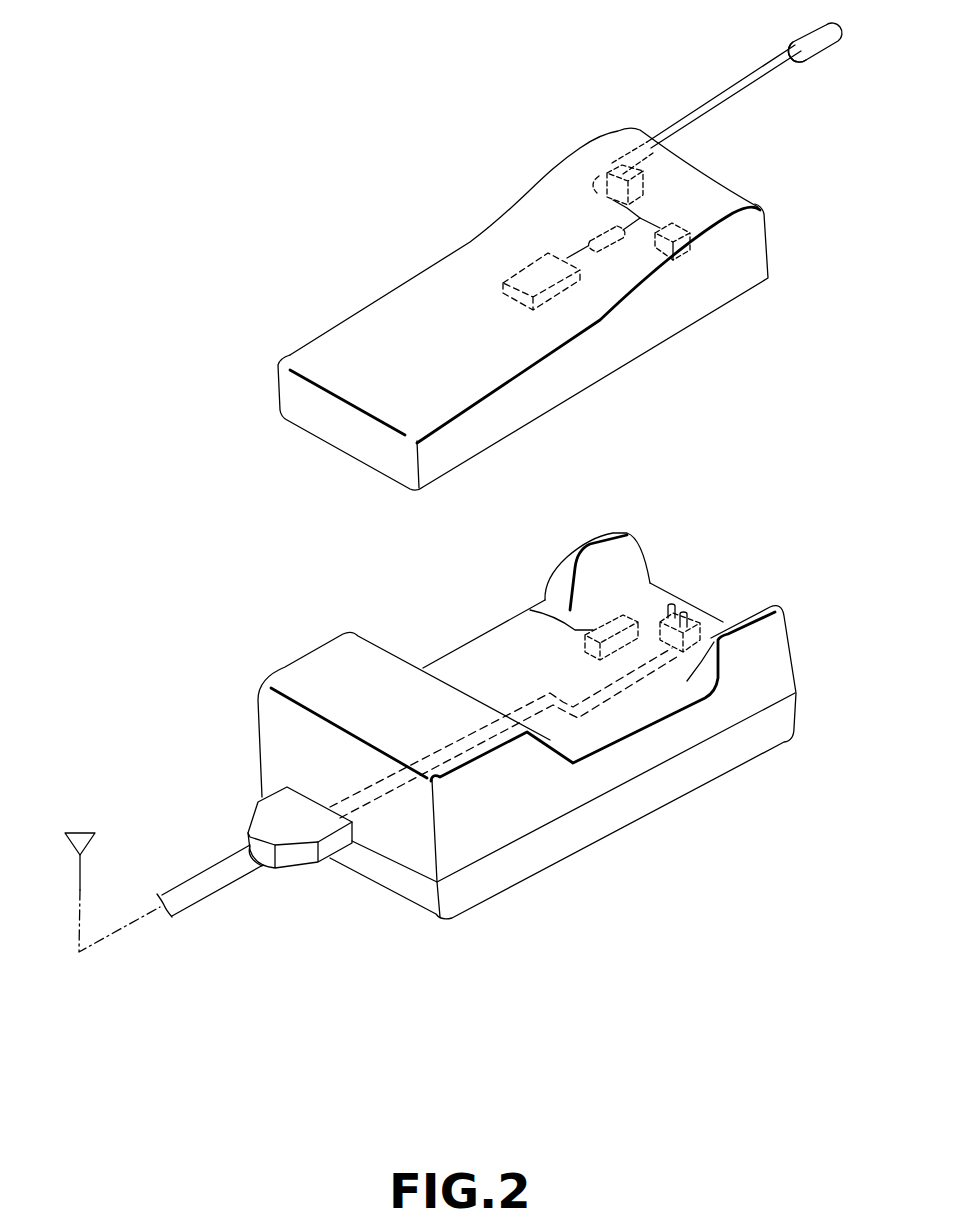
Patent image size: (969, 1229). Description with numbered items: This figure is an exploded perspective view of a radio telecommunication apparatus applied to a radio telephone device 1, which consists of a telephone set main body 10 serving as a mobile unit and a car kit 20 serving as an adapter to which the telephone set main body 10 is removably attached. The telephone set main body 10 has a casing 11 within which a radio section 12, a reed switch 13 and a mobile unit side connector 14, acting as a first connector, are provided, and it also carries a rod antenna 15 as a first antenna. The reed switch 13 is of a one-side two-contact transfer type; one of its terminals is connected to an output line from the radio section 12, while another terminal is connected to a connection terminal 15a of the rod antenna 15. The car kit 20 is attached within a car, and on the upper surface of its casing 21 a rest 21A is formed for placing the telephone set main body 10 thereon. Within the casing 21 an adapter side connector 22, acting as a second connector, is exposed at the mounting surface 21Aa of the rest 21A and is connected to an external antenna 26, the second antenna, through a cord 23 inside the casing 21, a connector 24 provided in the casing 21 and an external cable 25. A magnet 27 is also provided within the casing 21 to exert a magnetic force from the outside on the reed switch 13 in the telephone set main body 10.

The radio telephone device 1 is at (207, 168).
The telephone set main body 10 is at (298, 346).
The casing 11 is at (662, 322).
The radio section 12 is at (528, 278).
The reed switch 13 is at (617, 237).
The mobile unit side connector 14 is at (690, 231).
The rod antenna 15 is at (703, 107).
The connection terminal 15a is at (627, 200).
The car kit 20 is at (288, 658).
The casing 21 is at (545, 852).
The rest 21A is at (630, 700).
The mounting surface 21Aa is at (643, 592).
The adapter side connector 22 is at (697, 615).
The cord 23 is at (365, 790).
The connector 24 is at (328, 876).
The external cable 25 is at (202, 887).
The external antenna 26 is at (84, 830).
The magnet 27 is at (593, 630).